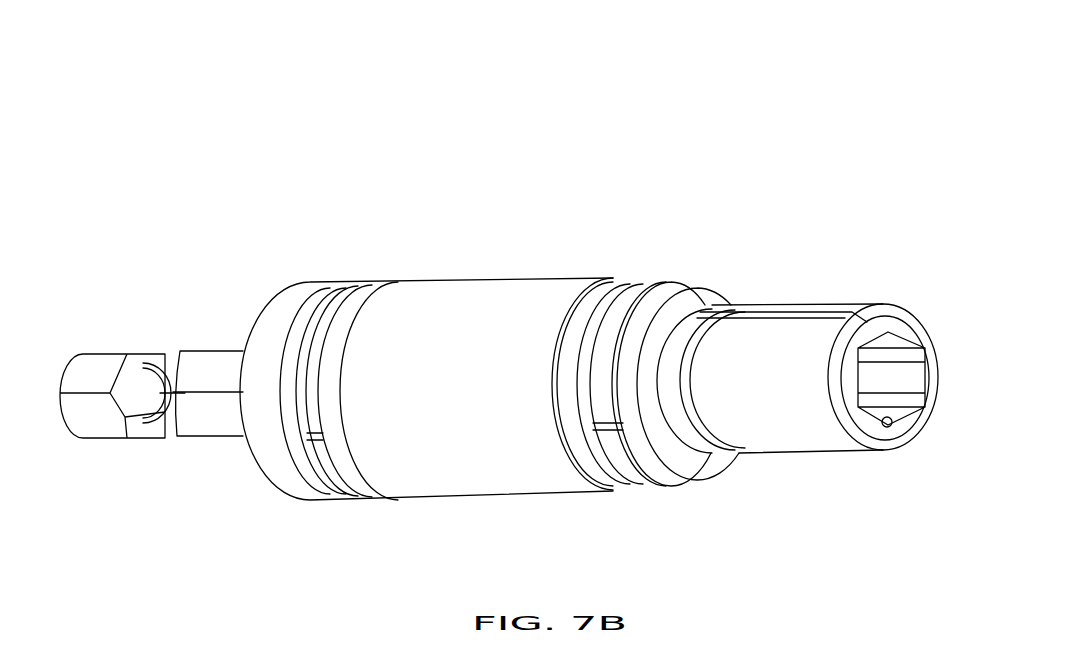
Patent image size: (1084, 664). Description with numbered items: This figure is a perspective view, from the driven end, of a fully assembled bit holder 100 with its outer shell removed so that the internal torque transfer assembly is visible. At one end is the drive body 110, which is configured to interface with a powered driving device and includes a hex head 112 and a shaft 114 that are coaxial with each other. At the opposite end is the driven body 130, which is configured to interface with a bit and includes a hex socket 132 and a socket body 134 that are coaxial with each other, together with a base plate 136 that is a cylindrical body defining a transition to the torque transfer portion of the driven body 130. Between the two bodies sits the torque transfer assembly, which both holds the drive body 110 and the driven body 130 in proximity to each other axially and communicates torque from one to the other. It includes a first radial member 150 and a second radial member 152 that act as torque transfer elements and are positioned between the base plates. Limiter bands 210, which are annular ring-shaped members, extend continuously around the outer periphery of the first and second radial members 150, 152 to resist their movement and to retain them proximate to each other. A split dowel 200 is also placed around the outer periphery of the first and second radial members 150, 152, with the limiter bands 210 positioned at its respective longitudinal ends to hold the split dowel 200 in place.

The bit holder 100 is at (558, 175).
The drive body 110 is at (189, 297).
The hex head 112 is at (105, 370).
The shaft 114 is at (200, 420).
The driven body 130 is at (829, 269).
The hex socket 132 is at (883, 362).
The socket body 134 is at (787, 403).
The base plate 136 is at (685, 457).
The first radial member 150 is at (313, 350).
The second radial member 152 is at (332, 460).
The split dowel 200 is at (458, 307).
The limiter band 210 is at (625, 288).